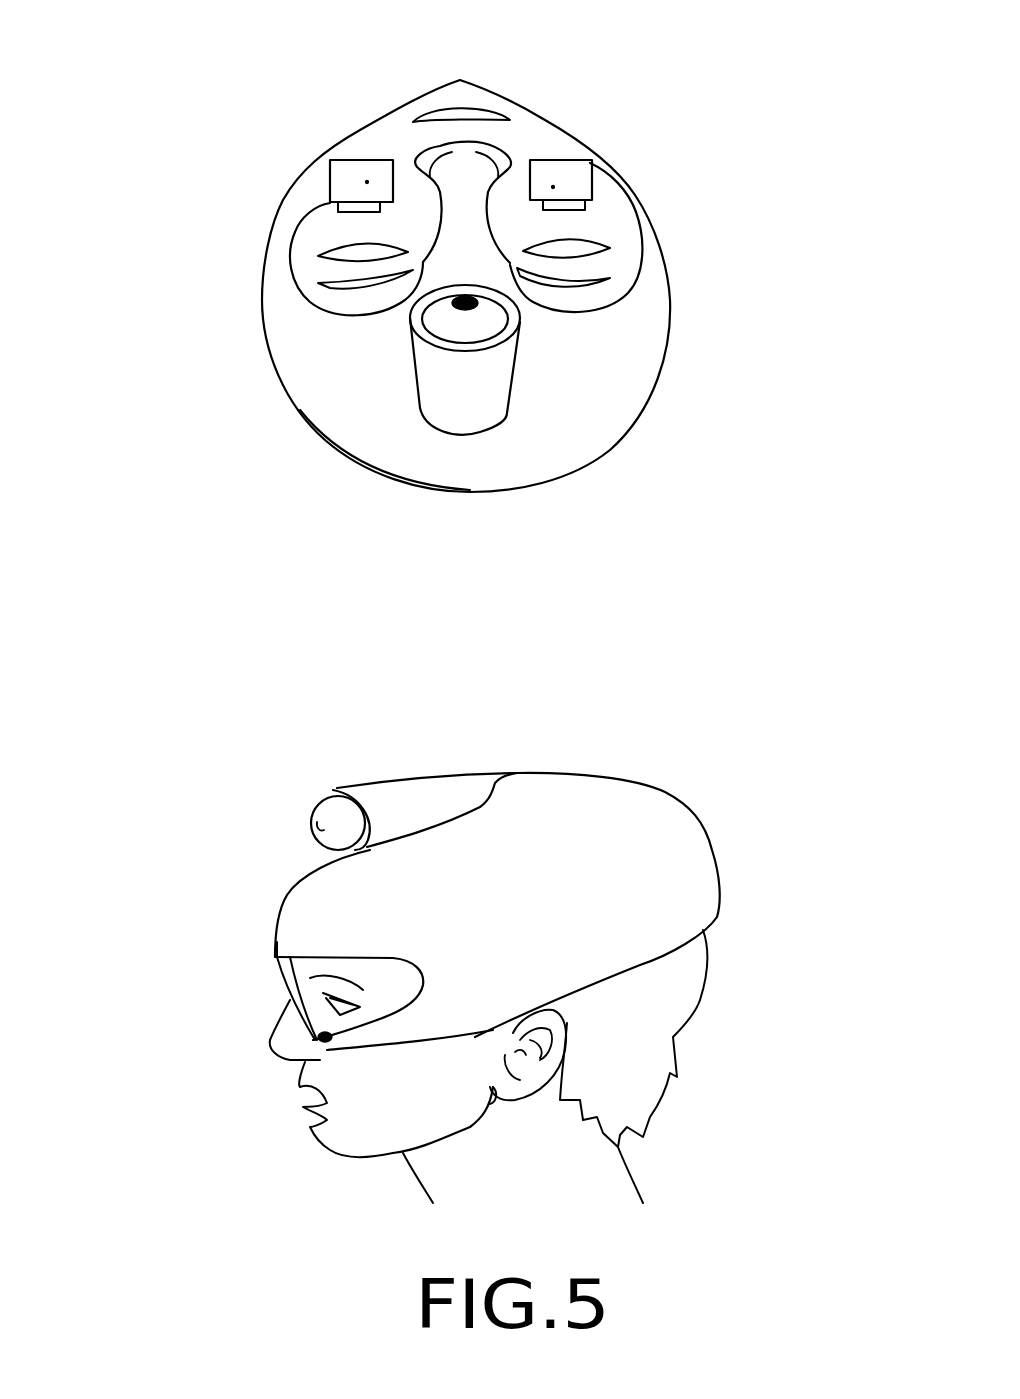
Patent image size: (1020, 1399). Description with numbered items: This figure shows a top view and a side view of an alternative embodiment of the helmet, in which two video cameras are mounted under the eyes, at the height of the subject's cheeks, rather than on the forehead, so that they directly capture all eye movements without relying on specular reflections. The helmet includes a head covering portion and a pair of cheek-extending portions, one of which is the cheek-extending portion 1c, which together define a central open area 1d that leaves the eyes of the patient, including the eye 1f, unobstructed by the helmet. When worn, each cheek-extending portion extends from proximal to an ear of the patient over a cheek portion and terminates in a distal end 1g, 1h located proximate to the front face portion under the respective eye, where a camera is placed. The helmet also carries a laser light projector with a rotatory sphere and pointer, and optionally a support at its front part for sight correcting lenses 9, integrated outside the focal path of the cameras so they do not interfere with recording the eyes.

The cheek-extending portion 1c is at (642, 211).
The central open area 1d is at (481, 266).
The eye of the patient 1f is at (630, 242).
The distal end 1g is at (356, 114).
The distal end 1h is at (534, 110).
The sight correcting lenses 9 is at (272, 977).